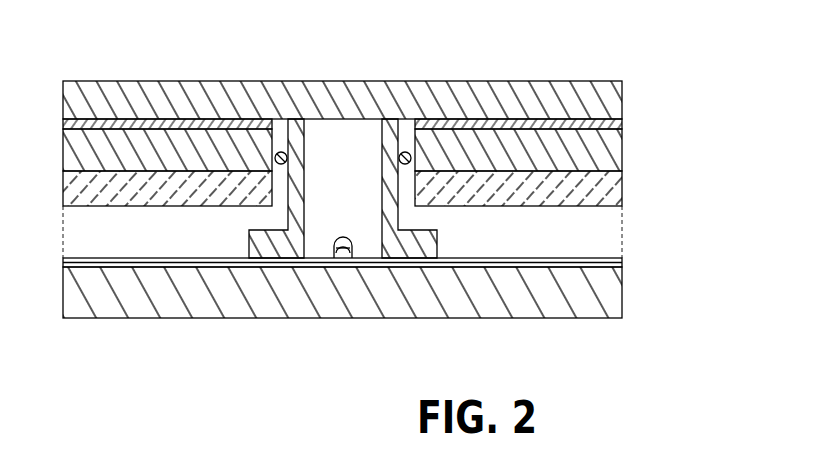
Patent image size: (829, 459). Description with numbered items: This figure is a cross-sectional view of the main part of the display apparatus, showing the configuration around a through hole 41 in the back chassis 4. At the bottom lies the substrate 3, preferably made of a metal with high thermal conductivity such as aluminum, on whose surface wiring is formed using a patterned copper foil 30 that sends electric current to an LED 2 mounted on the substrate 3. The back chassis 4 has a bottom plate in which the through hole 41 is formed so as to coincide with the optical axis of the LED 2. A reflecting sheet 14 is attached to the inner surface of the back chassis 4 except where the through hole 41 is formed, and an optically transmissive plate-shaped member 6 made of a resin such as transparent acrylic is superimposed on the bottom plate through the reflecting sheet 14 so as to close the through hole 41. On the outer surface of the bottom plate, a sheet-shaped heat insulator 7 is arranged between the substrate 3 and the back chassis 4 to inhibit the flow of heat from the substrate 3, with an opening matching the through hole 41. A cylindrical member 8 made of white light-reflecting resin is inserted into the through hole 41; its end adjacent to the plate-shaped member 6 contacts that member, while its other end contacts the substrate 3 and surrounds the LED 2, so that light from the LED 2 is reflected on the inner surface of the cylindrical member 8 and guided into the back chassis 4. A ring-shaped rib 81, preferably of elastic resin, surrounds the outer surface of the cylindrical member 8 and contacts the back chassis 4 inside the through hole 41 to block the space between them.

The LED 2 is at (345, 262).
The substrate 3 is at (493, 305).
The back chassis 4 is at (622, 157).
The plate-shaped member 6 is at (232, 80).
The heat insulator 7 is at (595, 205).
The cylindrical member 8 is at (437, 237).
The reflecting sheet 14 is at (622, 121).
The patterned copper foil 30 is at (622, 263).
The through hole 41 is at (405, 152).
The ring-shaped rib 81 is at (281, 152).